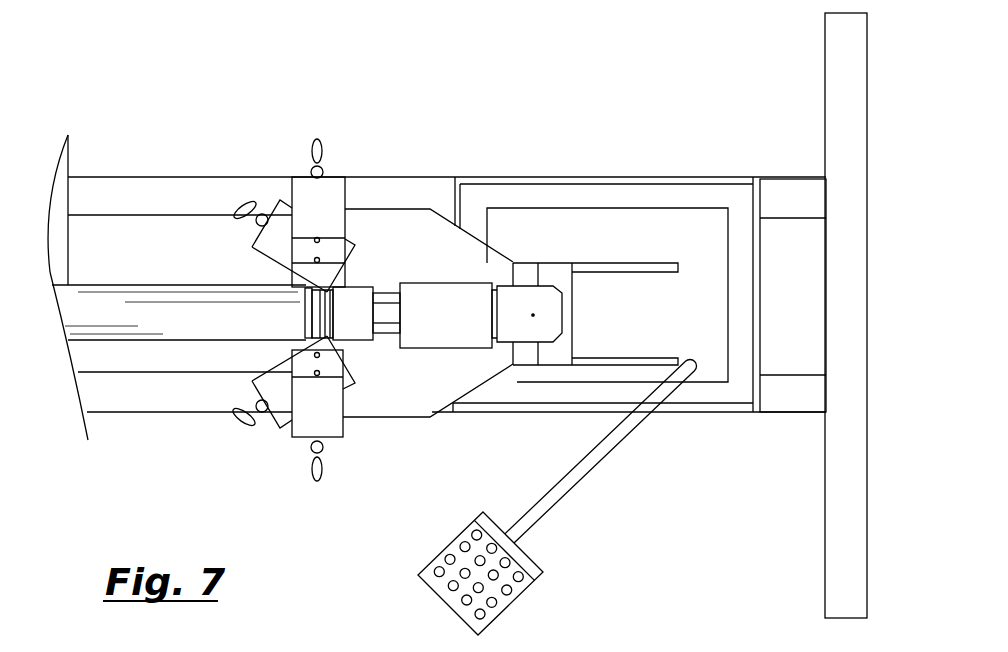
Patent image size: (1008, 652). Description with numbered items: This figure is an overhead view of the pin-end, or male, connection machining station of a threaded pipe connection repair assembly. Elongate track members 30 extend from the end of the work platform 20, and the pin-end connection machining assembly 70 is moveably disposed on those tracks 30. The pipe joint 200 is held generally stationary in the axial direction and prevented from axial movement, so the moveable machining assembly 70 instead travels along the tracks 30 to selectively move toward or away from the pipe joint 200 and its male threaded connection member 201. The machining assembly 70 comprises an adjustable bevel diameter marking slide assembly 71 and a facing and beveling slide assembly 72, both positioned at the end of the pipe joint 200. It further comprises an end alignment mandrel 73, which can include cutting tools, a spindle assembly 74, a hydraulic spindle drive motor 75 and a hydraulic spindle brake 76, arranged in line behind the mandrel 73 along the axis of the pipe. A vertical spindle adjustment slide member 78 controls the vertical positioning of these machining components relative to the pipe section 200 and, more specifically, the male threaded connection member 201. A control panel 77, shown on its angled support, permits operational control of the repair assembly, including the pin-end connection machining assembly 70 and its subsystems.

The work platform 20 is at (58, 213).
The pipe joint 200 is at (148, 307).
The male threaded connection member 201 is at (330, 322).
The elongate track members 30 is at (203, 190).
The pin-end (male) connection machining assembly 70 is at (538, 233).
The adjustable bevel diameter marking slide assembly 71 is at (322, 207).
The facing and beveling slide assembly 72 is at (308, 415).
The end alignment mandrel 73 is at (353, 300).
The spindle assembly 74 is at (435, 297).
The hydraulic spindle drive motor 75 is at (512, 323).
The hydraulic spindle brake 76 is at (560, 313).
The control panel 77 is at (518, 567).
The vertical spindle adjustment slide member 78 is at (533, 358).